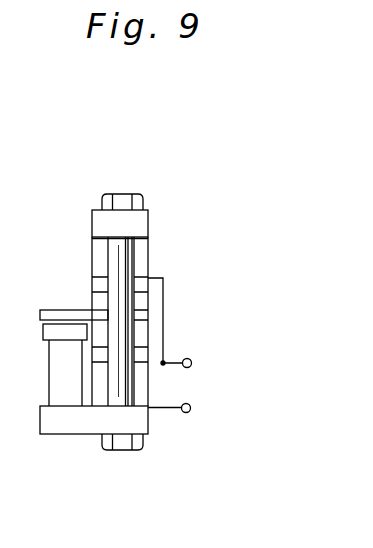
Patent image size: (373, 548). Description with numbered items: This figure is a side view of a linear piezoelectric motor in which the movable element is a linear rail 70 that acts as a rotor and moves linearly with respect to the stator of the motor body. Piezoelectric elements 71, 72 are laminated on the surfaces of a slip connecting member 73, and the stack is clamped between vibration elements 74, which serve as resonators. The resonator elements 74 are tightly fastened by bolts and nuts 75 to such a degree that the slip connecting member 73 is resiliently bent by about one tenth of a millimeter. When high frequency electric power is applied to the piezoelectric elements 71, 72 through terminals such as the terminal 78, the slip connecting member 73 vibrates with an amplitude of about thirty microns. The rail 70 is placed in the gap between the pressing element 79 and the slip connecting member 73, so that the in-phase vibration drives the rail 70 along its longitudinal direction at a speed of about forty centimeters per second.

The linear rail 70 is at (53, 333).
The piezoelectric element 71 is at (98, 252).
The piezoelectric element 72 is at (138, 386).
The slip connecting member 73 is at (73, 315).
The vibration element 74 is at (140, 222).
The nut 75 is at (121, 193).
The terminal 78 is at (191, 360).
The pressing element 79 is at (191, 408).